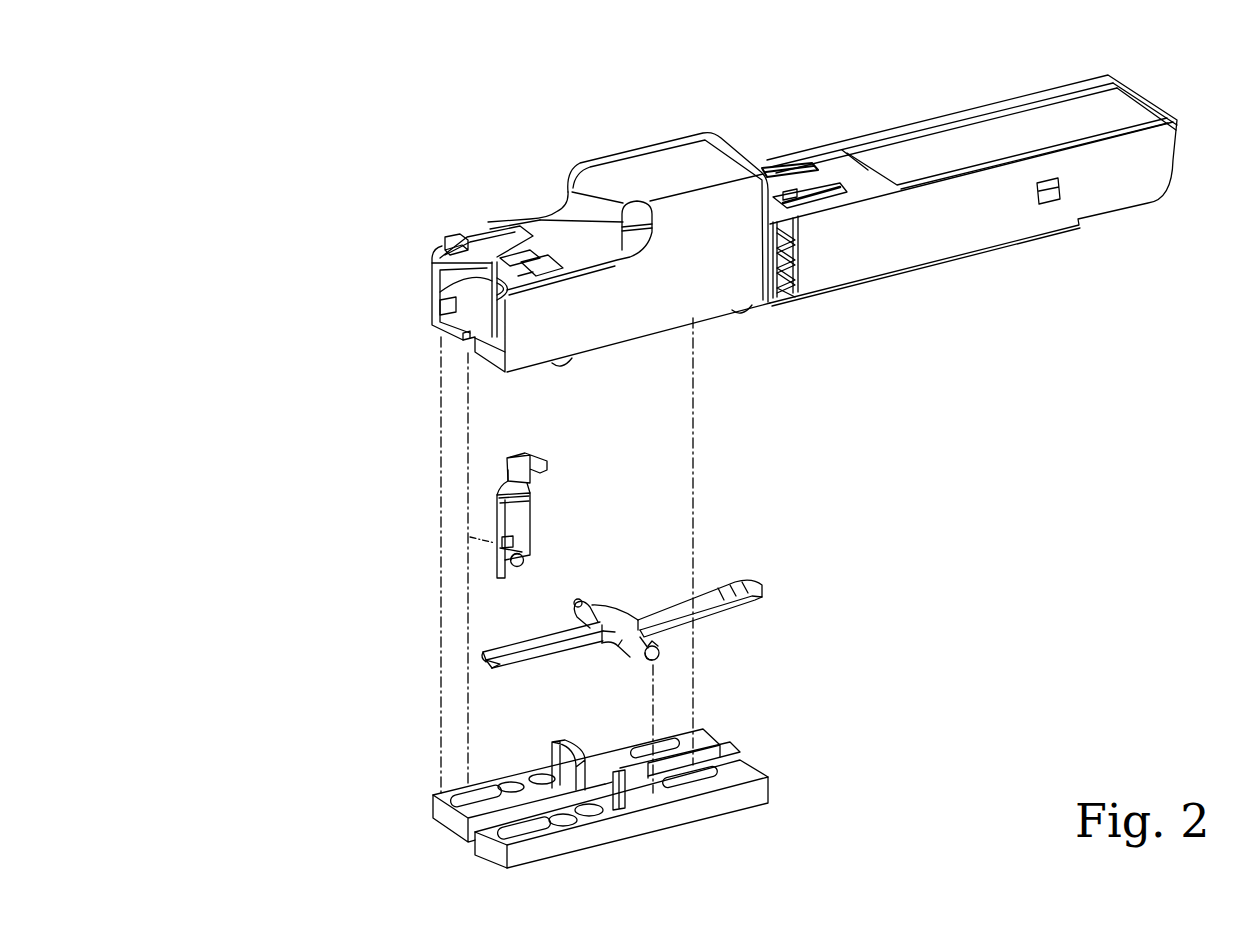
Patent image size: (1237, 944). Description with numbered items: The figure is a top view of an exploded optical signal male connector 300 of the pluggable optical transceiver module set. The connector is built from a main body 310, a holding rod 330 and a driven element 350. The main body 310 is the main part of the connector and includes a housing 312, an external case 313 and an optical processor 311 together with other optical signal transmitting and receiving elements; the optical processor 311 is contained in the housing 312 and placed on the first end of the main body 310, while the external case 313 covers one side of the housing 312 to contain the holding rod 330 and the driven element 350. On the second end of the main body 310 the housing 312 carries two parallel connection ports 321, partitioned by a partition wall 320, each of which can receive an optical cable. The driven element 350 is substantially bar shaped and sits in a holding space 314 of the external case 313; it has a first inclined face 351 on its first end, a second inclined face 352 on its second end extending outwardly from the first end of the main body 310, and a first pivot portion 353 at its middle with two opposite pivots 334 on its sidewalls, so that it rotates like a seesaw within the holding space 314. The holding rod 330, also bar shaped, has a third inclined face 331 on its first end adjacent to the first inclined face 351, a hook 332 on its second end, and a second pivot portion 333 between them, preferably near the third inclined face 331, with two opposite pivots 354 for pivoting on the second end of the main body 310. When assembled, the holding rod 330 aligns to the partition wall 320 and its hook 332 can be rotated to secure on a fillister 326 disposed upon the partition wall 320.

The optical signal male connector 300 is at (161, 182).
The main body 310 is at (742, 130).
The optical processor 311 is at (1118, 102).
The housing 312 is at (662, 157).
The external case 313 is at (723, 803).
The holding space 314 is at (530, 803).
The partition wall 320 is at (485, 283).
The connection ports 321 is at (528, 266).
The fillister 326 is at (462, 243).
The holding rod 330 is at (538, 512).
The third inclined face 331 is at (513, 568).
The hook 332 is at (531, 461).
The second pivot portion 333 is at (342, 550).
The pivots 334 is at (578, 600).
The driven element 350 is at (734, 548).
The first inclined face 351 is at (500, 672).
The second inclined face 352 is at (752, 593).
The first pivot portion 353 is at (687, 517).
The pivots 354 is at (493, 545).